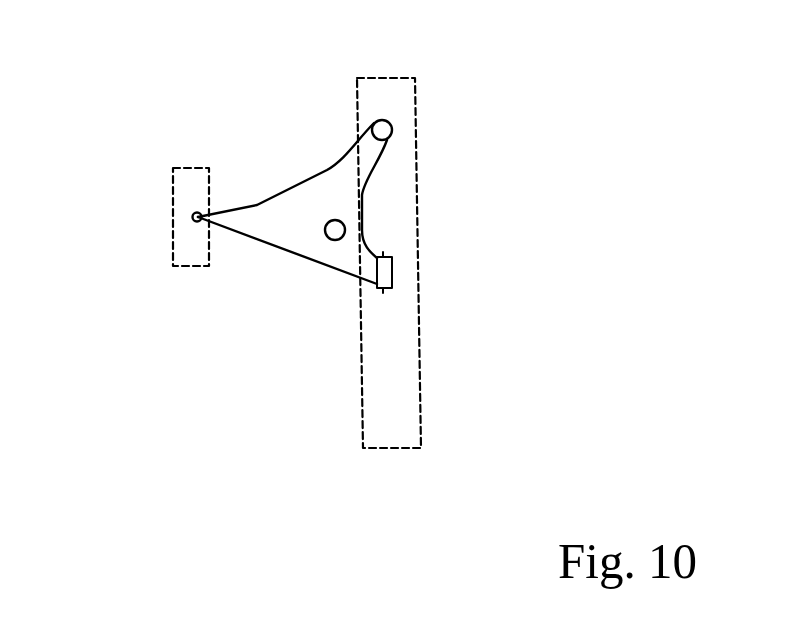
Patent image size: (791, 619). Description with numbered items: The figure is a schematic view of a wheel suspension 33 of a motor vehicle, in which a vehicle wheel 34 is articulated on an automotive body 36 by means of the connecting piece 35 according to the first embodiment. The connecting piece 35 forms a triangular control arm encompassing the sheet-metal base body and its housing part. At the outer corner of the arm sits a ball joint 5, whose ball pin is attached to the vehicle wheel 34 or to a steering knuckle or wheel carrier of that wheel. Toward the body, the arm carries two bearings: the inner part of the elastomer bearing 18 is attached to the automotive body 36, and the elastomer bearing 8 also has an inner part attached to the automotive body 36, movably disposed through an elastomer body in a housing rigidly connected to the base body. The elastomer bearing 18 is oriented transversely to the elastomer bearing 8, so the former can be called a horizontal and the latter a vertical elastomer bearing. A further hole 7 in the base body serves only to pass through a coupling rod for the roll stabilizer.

The wheel suspension 33 is at (262, 110).
The connecting piece 35 is at (260, 233).
The ball joint 5 is at (194, 216).
The elastomer bearing 8 is at (382, 130).
The hole 7 is at (333, 240).
The elastomer bearing 18 is at (392, 270).
The vehicle wheel 34 is at (187, 249).
The automotive body 36 is at (403, 393).